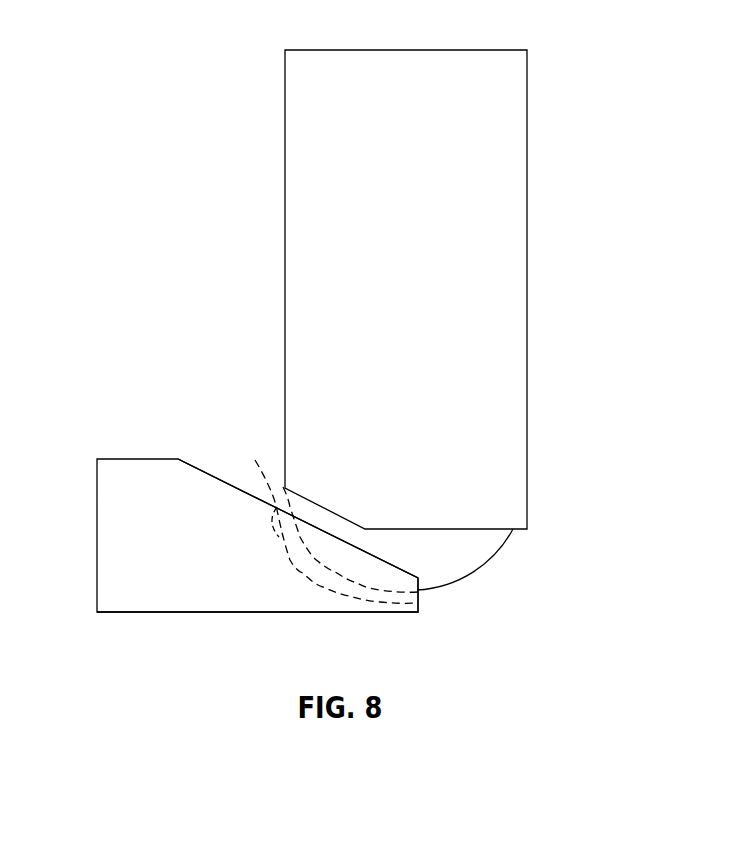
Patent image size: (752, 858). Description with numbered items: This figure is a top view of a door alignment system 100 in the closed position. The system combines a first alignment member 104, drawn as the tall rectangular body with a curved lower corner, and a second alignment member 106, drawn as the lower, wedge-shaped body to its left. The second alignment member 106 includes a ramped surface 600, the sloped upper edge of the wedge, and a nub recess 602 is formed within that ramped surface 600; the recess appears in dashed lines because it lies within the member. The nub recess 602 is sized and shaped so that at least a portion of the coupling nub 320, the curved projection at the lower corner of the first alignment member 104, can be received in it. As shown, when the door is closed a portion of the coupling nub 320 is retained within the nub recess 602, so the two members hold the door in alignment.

The door alignment system 100 is at (131, 129).
The first alignment member 104 is at (528, 343).
The second alignment member 106 is at (133, 598).
The ramped surface 600 is at (232, 598).
The nub recess 602 is at (310, 526).
The coupling nub 320 is at (500, 563).